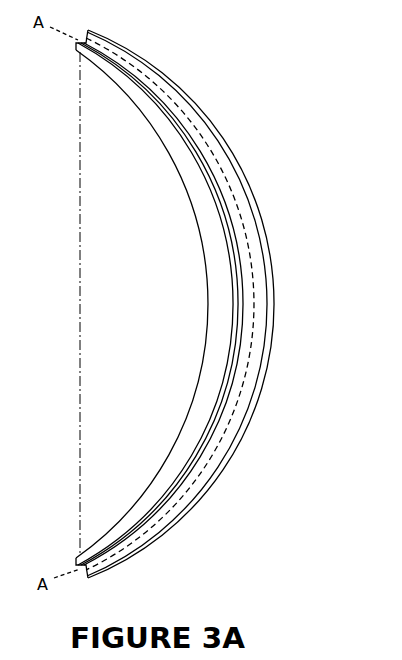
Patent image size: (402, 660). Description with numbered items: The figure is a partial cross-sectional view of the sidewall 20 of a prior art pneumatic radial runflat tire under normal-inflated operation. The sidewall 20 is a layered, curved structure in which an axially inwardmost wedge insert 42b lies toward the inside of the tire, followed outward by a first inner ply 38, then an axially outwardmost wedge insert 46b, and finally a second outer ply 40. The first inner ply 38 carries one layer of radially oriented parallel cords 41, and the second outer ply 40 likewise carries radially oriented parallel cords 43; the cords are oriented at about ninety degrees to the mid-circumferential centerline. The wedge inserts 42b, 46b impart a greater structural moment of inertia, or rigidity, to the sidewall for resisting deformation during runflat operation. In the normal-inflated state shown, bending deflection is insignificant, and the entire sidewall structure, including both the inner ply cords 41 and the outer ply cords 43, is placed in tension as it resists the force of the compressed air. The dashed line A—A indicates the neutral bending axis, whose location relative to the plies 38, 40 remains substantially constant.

The sidewall portion 20 is at (210, 304).
The first inner ply 38 is at (223, 230).
The second outer ply 40 is at (246, 183).
The inner ply cords 41 is at (230, 267).
The axially inwardmost sidewall wedge insert 42b is at (213, 323).
The outer ply cords 43 is at (258, 222).
The axially outwardmost sidewall wedge insert 46b is at (253, 280).